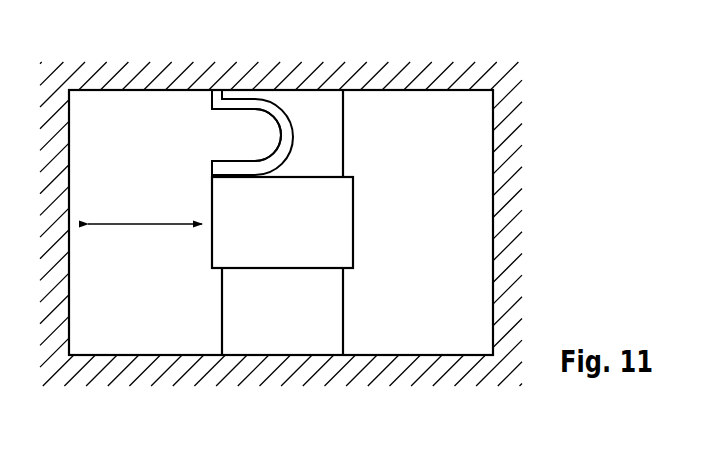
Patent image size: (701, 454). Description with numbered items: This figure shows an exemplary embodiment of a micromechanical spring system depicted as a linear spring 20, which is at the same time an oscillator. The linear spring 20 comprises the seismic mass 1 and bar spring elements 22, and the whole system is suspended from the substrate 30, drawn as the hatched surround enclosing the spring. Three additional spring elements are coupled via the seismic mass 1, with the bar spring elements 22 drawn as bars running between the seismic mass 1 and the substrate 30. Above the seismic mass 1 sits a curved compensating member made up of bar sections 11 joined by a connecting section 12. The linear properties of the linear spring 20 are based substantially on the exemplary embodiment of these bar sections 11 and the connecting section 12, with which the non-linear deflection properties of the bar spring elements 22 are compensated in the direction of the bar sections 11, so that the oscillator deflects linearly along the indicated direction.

The seismic mass 1 is at (342, 231).
The bar sections 11 is at (237, 111).
The connecting section 12 is at (296, 129).
The linear spring 20 is at (190, 248).
The bar spring elements 22 is at (343, 136).
The substrate 30 is at (510, 136).